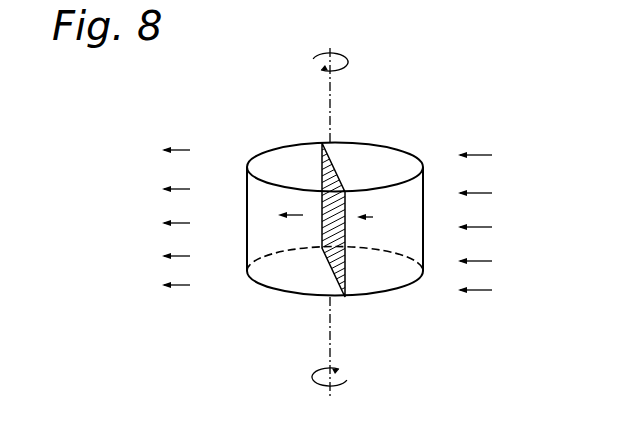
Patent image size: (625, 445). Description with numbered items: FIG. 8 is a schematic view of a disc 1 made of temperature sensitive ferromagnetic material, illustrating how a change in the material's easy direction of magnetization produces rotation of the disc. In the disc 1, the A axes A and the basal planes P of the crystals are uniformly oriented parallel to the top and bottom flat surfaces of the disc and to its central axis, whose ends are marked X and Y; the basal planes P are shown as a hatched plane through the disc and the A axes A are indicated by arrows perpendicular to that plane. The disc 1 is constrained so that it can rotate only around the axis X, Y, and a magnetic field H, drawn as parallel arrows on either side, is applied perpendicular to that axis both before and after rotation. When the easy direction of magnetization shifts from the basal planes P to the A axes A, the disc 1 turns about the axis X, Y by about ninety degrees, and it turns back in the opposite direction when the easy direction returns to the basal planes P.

The disc 1 is at (397, 293).
The basal planes P is at (334, 163).
The A axes A is at (373, 217).
The magnetic field H is at (340, 220).
The central axis X is at (330, 81).
The central axis Y is at (329, 363).